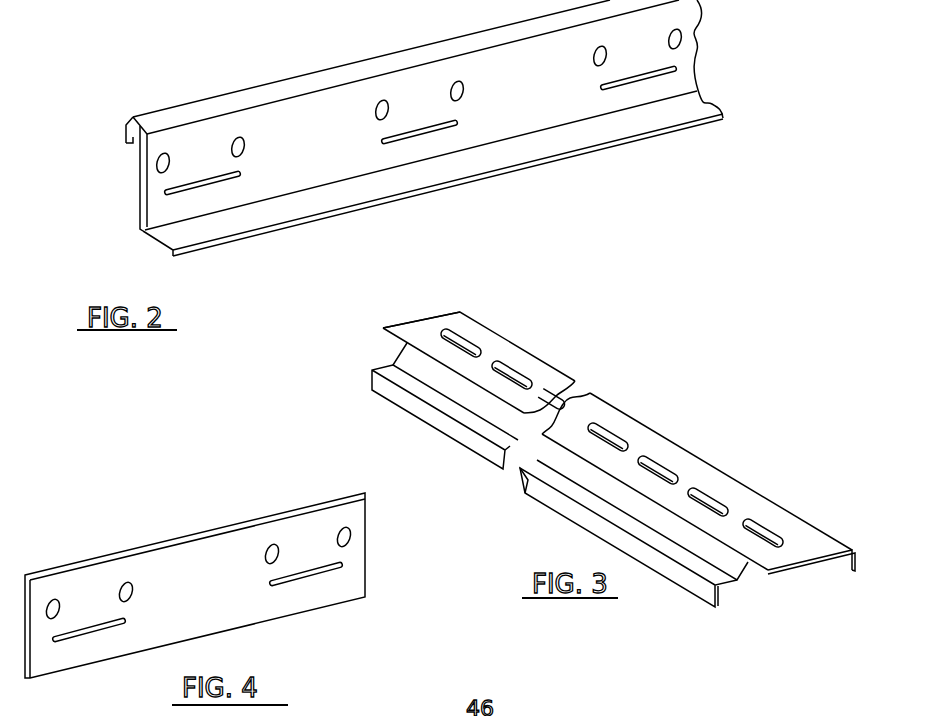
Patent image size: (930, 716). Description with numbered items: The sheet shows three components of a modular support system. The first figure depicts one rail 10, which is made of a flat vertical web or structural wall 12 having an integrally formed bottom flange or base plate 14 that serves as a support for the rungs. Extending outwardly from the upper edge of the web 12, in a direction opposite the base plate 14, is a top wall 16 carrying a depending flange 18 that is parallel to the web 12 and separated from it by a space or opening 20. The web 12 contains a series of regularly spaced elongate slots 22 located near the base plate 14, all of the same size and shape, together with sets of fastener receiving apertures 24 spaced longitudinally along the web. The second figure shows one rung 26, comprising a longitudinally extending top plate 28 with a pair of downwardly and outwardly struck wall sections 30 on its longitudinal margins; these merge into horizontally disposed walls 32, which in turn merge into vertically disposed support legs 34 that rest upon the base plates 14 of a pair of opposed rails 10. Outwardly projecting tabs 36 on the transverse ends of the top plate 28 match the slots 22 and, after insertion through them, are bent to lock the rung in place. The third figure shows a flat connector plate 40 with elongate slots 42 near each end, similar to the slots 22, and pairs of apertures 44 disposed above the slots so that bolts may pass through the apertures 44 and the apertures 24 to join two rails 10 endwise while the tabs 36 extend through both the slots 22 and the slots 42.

In FIG. 2, the rail 10 is at (389, 144).
In FIG. 2, the web 12 is at (150, 210).
In FIG. 2, the bottom flange 14 is at (163, 235).
In FIG. 2, the top wall 16 is at (480, 38).
In FIG. 2, the depending flange 18 is at (125, 132).
In FIG. 2, the space 20 is at (133, 143).
In FIG. 2, the slots 22 is at (240, 175).
In FIG. 2, the fastener receiving apertures 24 is at (168, 165).
In FIG. 3, the rung 26 is at (613, 450).
In FIG. 3, the top plate 28 is at (531, 384).
In FIG. 3, the wall sections 30 is at (746, 563).
In FIG. 3, the horizontally disposed walls 32 is at (807, 525).
In FIG. 3, the support legs 34 is at (710, 590).
In FIG. 3, the tabs 36 is at (417, 322).
In FIG. 4, the connector plate 40 is at (219, 557).
In FIG. 4, the elongate slots 42 is at (125, 620).
In FIG. 4, the apertures 44 is at (55, 598).